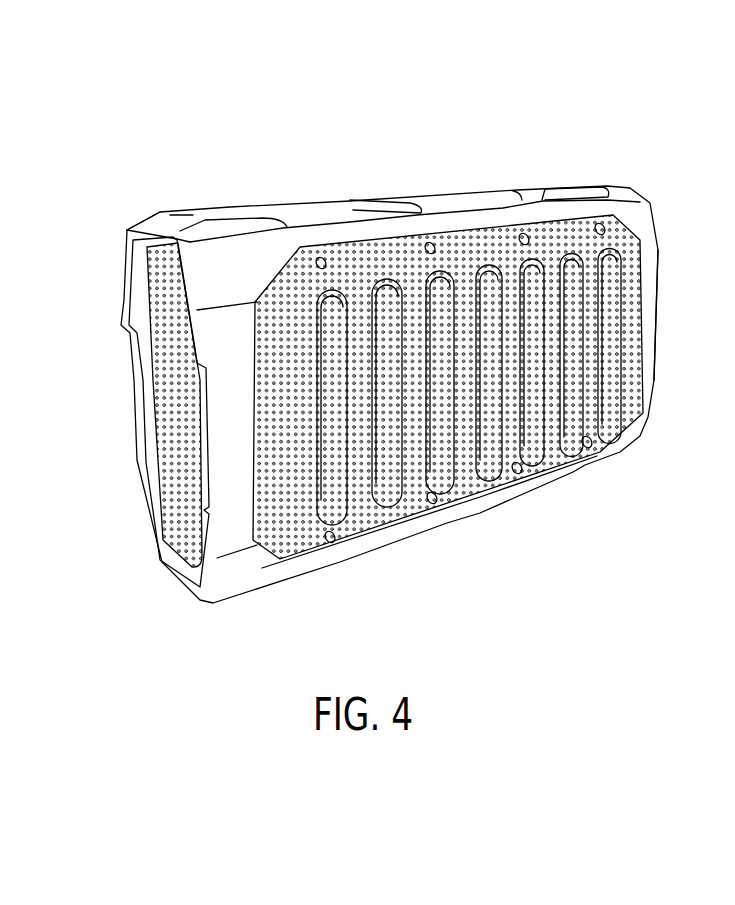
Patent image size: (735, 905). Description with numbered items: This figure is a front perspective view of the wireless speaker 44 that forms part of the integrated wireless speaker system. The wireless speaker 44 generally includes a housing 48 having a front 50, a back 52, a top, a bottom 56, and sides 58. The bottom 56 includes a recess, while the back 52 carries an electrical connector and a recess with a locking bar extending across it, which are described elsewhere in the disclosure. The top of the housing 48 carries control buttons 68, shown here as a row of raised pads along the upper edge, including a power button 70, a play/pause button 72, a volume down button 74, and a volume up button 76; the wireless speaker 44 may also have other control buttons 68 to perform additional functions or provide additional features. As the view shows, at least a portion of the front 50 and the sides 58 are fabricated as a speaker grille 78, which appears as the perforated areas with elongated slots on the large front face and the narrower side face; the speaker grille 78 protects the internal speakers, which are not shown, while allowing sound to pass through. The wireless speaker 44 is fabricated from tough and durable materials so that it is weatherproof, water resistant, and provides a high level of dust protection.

The wireless speaker 44 is at (373, 126).
The housing 48 is at (112, 222).
The front 50 is at (391, 457).
The back 52 is at (221, 210).
The bottom 56 is at (264, 594).
The sides 58 is at (659, 250).
The control buttons 68 is at (549, 144).
The power button 70 is at (277, 205).
The play/pause button 72 is at (348, 199).
The volume down button 74 is at (518, 188).
The volume up button 76 is at (558, 197).
The speaker grille 78 is at (165, 413).